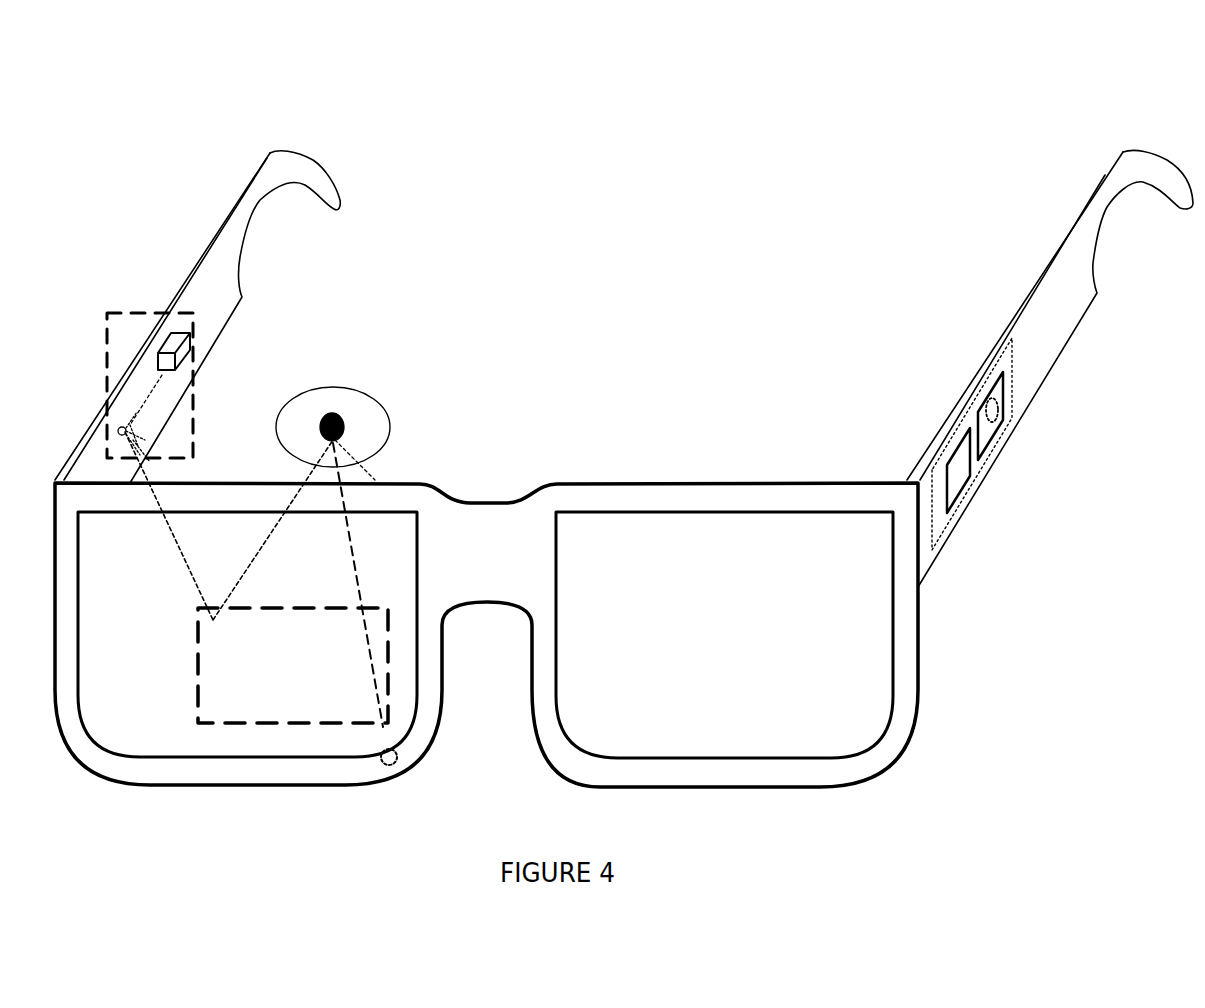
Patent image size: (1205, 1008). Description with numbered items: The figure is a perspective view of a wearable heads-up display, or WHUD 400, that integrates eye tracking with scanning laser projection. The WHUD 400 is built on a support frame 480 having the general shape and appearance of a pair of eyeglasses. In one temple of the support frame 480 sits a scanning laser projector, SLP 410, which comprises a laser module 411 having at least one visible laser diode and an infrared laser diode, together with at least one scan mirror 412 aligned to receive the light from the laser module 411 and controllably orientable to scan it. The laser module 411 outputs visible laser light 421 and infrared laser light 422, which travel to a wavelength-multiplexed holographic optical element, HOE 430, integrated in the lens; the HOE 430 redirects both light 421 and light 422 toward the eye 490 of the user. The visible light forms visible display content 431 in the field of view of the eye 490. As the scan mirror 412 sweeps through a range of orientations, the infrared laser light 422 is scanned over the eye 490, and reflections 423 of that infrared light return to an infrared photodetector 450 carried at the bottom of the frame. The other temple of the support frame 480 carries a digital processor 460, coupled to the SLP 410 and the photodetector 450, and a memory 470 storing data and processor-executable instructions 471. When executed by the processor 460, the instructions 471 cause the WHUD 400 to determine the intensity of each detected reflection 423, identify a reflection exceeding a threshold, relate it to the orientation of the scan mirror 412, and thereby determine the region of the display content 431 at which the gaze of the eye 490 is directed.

The wearable heads-up display 400 is at (147, 132).
The scanning laser projector 410 is at (107, 313).
The laser module 411 is at (175, 352).
The scan mirror 412 is at (118, 430).
The visible laser light 421 is at (196, 588).
The infrared laser light 422 is at (258, 563).
The reflections of infrared laser light 423 is at (372, 676).
The wavelength-multiplexed holographic optical element 430 is at (170, 690).
The visible display content 431 is at (254, 718).
The infrared photodetector 450 is at (390, 763).
The digital processor 460 is at (950, 497).
The memory 470 is at (983, 435).
The processor-executable instructions 471 is at (997, 412).
The support frame 480 is at (1053, 310).
The eye 490 is at (349, 392).